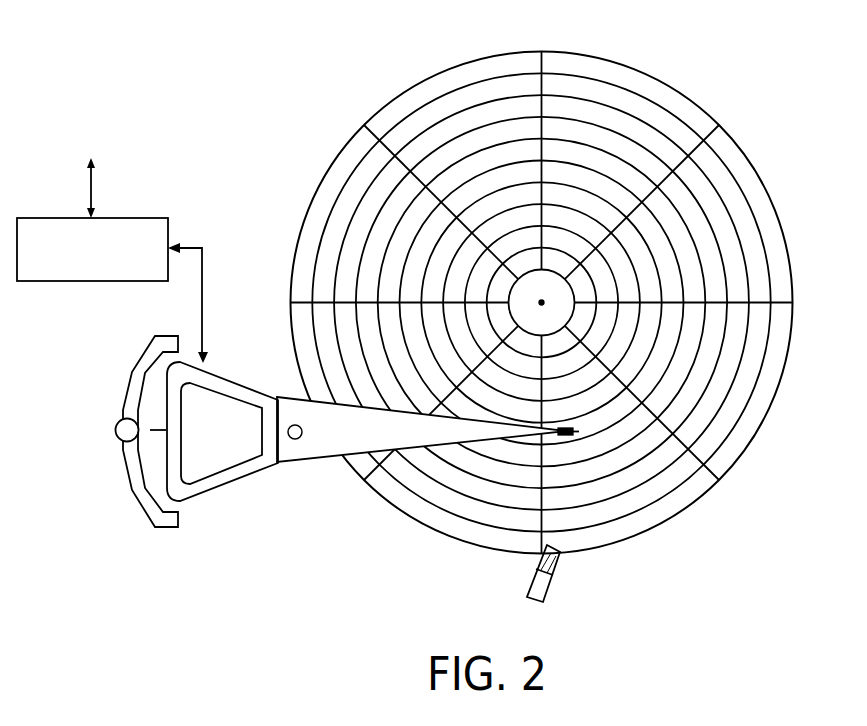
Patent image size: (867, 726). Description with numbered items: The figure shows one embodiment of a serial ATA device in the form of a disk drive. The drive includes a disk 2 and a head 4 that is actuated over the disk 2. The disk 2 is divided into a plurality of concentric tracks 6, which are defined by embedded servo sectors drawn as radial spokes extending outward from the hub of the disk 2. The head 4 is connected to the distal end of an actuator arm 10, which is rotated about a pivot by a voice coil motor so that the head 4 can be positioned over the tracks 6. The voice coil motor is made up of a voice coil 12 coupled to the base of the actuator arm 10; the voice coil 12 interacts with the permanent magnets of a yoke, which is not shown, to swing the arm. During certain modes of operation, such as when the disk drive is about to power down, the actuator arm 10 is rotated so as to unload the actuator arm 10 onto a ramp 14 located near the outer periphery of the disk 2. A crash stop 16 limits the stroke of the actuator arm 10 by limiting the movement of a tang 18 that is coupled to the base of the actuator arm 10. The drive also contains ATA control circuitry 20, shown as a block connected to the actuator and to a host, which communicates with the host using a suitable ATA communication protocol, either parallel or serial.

The disk 2 is at (539, 307).
The head 4 is at (572, 412).
The tracks 6 is at (762, 224).
The actuator arm 10 is at (290, 465).
The voice coil 12 is at (212, 505).
The ramp 14 is at (557, 588).
The crash stop 16 is at (100, 431).
The tang 18 is at (152, 428).
The ATA control circuitry 20 is at (97, 282).